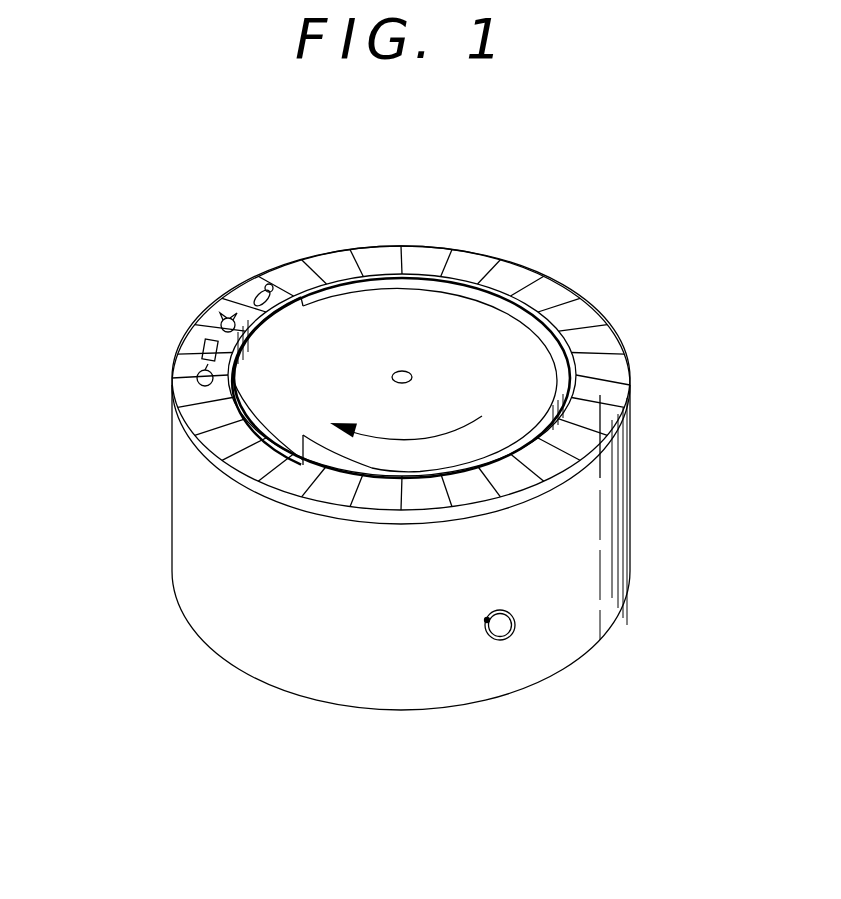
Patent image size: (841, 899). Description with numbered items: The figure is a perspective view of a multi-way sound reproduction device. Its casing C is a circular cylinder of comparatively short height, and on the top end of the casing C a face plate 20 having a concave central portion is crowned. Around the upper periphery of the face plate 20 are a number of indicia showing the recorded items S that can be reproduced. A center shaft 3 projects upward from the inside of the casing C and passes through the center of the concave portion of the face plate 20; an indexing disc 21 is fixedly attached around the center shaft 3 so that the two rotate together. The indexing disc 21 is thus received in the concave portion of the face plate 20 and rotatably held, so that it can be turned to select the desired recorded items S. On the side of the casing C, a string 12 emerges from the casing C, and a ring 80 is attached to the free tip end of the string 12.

The casing C is at (188, 548).
The recorded items S is at (172, 376).
The face plate 20 is at (605, 320).
The indexing disc 21 is at (437, 335).
The center shaft 3 is at (403, 371).
The ring 80 is at (513, 634).
The string 12 is at (485, 623).